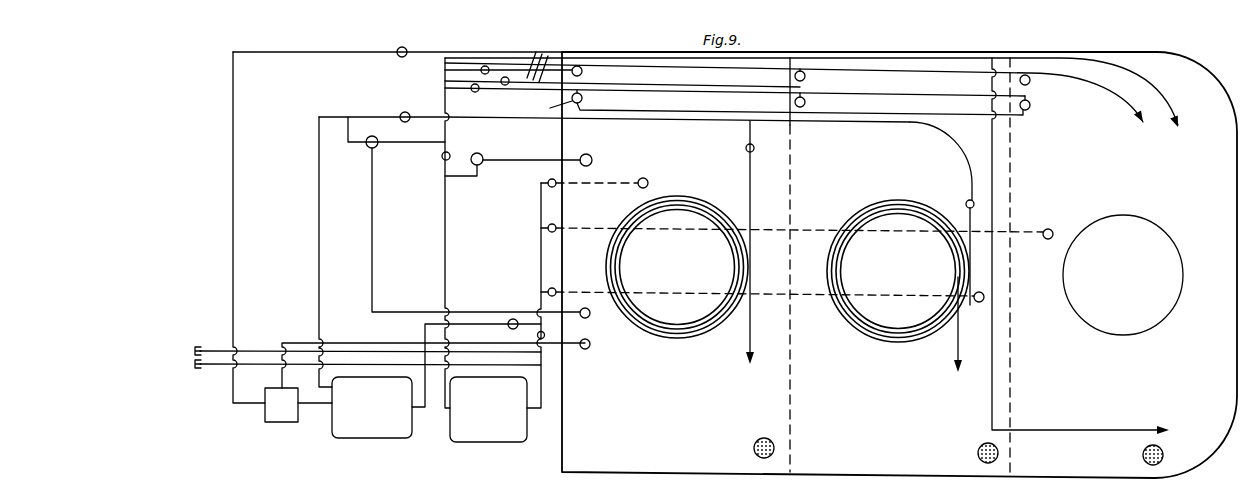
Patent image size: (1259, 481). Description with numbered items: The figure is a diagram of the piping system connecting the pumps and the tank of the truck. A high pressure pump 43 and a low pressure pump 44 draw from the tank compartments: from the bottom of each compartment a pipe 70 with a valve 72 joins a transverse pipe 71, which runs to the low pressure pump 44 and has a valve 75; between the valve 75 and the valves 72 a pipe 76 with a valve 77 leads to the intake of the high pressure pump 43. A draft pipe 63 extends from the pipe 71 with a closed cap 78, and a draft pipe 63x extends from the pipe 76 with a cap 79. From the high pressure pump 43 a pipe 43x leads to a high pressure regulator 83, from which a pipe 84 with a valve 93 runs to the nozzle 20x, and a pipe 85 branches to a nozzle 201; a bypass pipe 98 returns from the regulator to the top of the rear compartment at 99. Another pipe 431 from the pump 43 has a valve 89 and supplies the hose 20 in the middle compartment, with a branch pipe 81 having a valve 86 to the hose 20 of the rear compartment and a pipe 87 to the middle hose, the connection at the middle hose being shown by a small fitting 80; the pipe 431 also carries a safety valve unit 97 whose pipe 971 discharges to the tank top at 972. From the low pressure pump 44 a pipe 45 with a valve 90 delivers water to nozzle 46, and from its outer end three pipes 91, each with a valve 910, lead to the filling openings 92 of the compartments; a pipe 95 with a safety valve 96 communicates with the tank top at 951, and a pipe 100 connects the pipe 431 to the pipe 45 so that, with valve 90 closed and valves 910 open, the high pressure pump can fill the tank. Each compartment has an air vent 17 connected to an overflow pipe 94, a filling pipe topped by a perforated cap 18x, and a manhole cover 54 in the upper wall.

The air vent 17 is at (583, 98).
The perforated cap 18x is at (762, 438).
The hose 20 is at (676, 338).
The nozzle 20x is at (752, 360).
The high pressure pump 43 is at (372, 430).
The pipe 43x is at (315, 412).
The low pressure pump 44 is at (487, 432).
The pipe 45 is at (441, 402).
The nozzle 46 is at (1138, 124).
The manhole cover 54 is at (1112, 326).
The draft pipe 63 is at (468, 365).
The draft pipe 63x is at (335, 351).
The pipe 70 is at (630, 188).
The transverse pipe 71 is at (540, 250).
The valve 72 is at (556, 190).
The valve 75 is at (545, 333).
The pipe 76 is at (483, 320).
The valve 77 is at (512, 318).
The closed cap 78 is at (195, 369).
The cap 79 is at (195, 345).
The contact 80 is at (974, 203).
The pipe 81 is at (752, 205).
The high pressure regulator 83 is at (274, 422).
The pipe 84 is at (233, 195).
The pipe 85 is at (1008, 163).
The valve 86 is at (755, 152).
The pipe 87 is at (963, 214).
The valve 89 is at (406, 111).
The valve 90 is at (444, 160).
The pipe 91 is at (811, 80).
The filling opening 92 is at (580, 66).
The valve 93 is at (406, 49).
The pipe 94 is at (871, 122).
The pipe 95 is at (518, 159).
The safety valve 96 is at (479, 153).
The safety valve unit 97 is at (369, 148).
The pipe 98 is at (286, 339).
The communication point 99 is at (588, 350).
The pipe 100 is at (398, 143).
The nozzle 201 is at (1165, 427).
The pipe 431 is at (319, 160).
The valve 910 is at (505, 77).
The communication point 951 is at (592, 160).
The pipe 971 is at (372, 255).
The communication point 972 is at (591, 315).